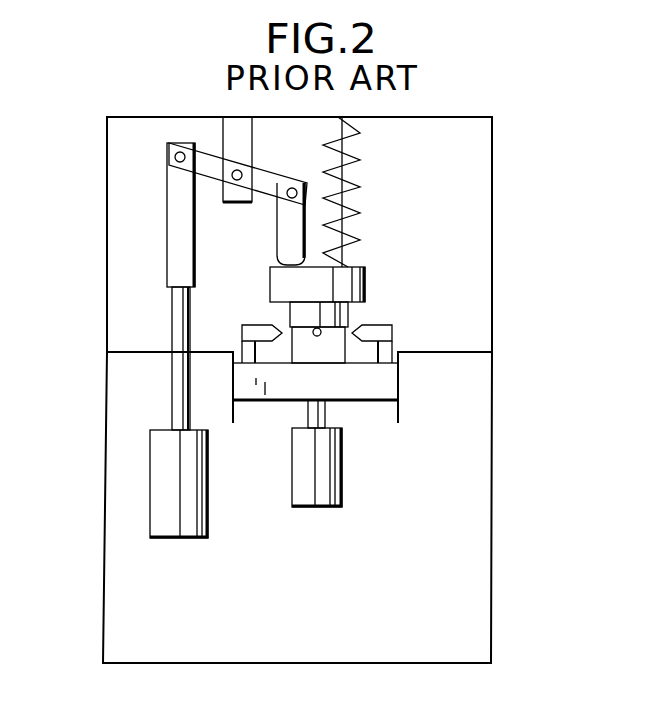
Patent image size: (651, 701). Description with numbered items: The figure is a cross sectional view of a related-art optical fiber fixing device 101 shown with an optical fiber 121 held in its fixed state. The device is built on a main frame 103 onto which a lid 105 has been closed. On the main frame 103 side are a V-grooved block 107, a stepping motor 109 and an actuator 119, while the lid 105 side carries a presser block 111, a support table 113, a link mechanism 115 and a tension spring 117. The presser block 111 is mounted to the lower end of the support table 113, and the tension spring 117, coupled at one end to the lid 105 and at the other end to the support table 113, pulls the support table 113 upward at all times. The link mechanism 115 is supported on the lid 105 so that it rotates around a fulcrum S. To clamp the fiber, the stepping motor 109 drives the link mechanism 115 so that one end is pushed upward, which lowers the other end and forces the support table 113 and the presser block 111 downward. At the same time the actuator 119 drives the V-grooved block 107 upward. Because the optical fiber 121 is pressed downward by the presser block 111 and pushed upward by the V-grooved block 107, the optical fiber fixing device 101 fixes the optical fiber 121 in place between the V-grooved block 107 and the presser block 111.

The optical fiber fixing device 101 is at (470, 103).
The main frame 103 is at (491, 493).
The lid 105 is at (492, 200).
The V-grooved block 107 is at (303, 358).
The stepping motor 109 is at (208, 525).
The presser block 111 is at (302, 315).
The support table 113 is at (365, 285).
The link mechanism 115 is at (283, 215).
The tension spring 117 is at (362, 185).
The actuator 119 is at (342, 497).
The optical fiber 121 is at (319, 336).
The fulcrum S is at (243, 173).